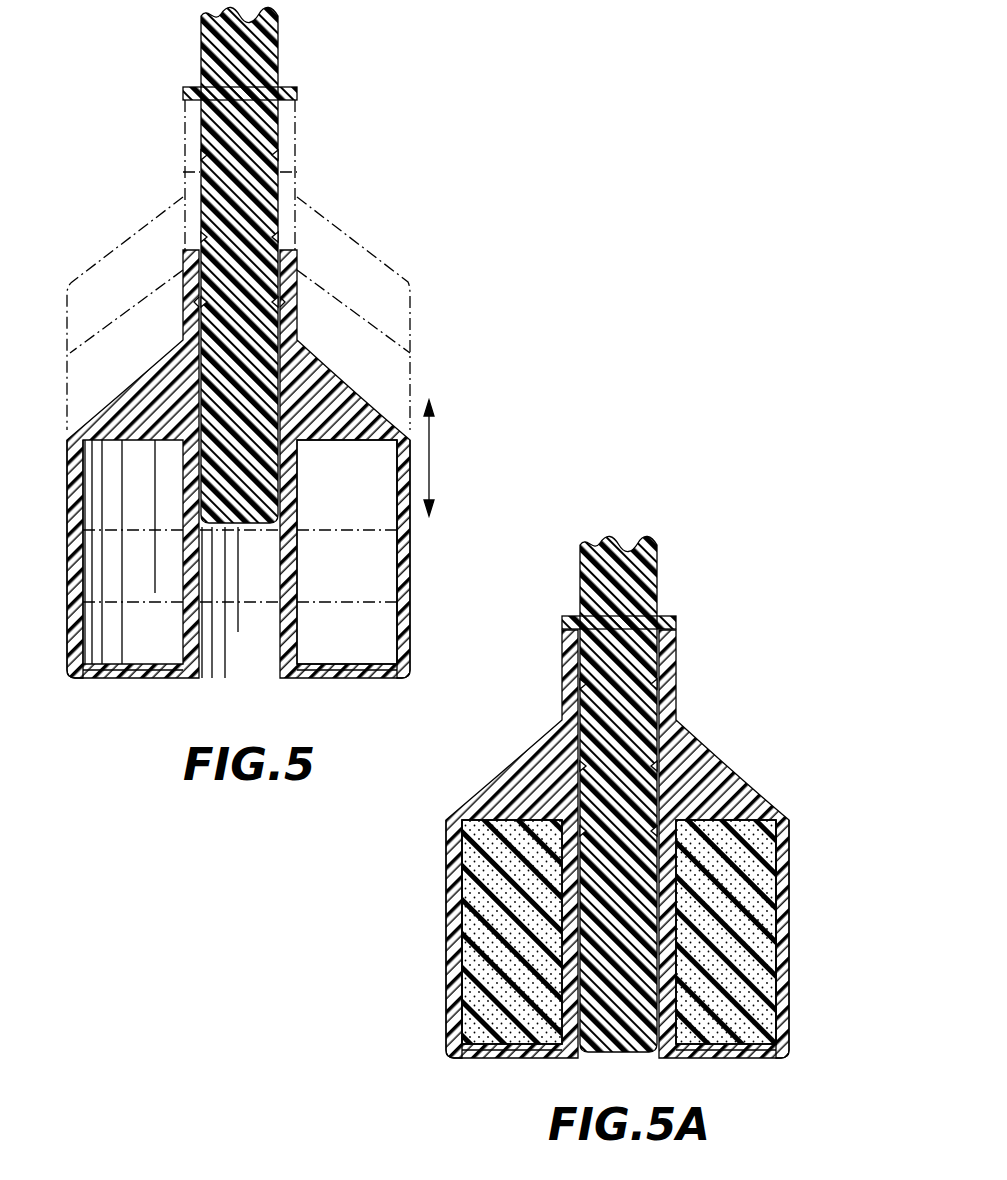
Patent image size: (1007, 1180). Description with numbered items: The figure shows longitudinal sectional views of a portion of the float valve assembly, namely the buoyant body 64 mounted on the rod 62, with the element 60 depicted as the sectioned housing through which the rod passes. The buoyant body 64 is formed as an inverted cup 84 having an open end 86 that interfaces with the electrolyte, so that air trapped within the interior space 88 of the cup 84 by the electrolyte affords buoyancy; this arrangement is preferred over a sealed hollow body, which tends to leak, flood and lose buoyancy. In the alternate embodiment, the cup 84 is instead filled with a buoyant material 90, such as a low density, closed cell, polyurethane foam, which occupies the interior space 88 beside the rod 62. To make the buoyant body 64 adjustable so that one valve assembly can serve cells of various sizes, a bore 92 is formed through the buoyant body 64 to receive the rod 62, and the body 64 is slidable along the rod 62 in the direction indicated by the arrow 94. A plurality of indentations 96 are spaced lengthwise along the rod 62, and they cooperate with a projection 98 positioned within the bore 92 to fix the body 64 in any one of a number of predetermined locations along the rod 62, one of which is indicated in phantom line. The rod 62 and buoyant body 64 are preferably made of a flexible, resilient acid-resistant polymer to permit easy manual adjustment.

In FIG. 5, the body 60 is at (340, 407).
In FIG. 5A, the body 60 is at (725, 780).
In FIG. 5, the rod 62 is at (273, 40).
In FIG. 5A, the rod 62 is at (653, 568).
In FIG. 5, the buoyant body 64 is at (70, 472).
In FIG. 5A, the buoyant body 64 is at (447, 948).
In FIG. 5, the inverted cup 84 is at (408, 553).
In FIG. 5A, the inverted cup 84 is at (782, 935).
In FIG. 5, the open end 86 is at (383, 678).
In FIG. 5, the interior space 88 is at (380, 637).
In FIG. 5A, the buoyant material 90 is at (728, 1042).
In FIG. 5, the bore 92 is at (233, 670).
In FIG. 5, the arrow 94 is at (432, 456).
In FIG. 5, the indentations 96 is at (277, 157).
In FIG. 5, the projection 98 is at (277, 303).